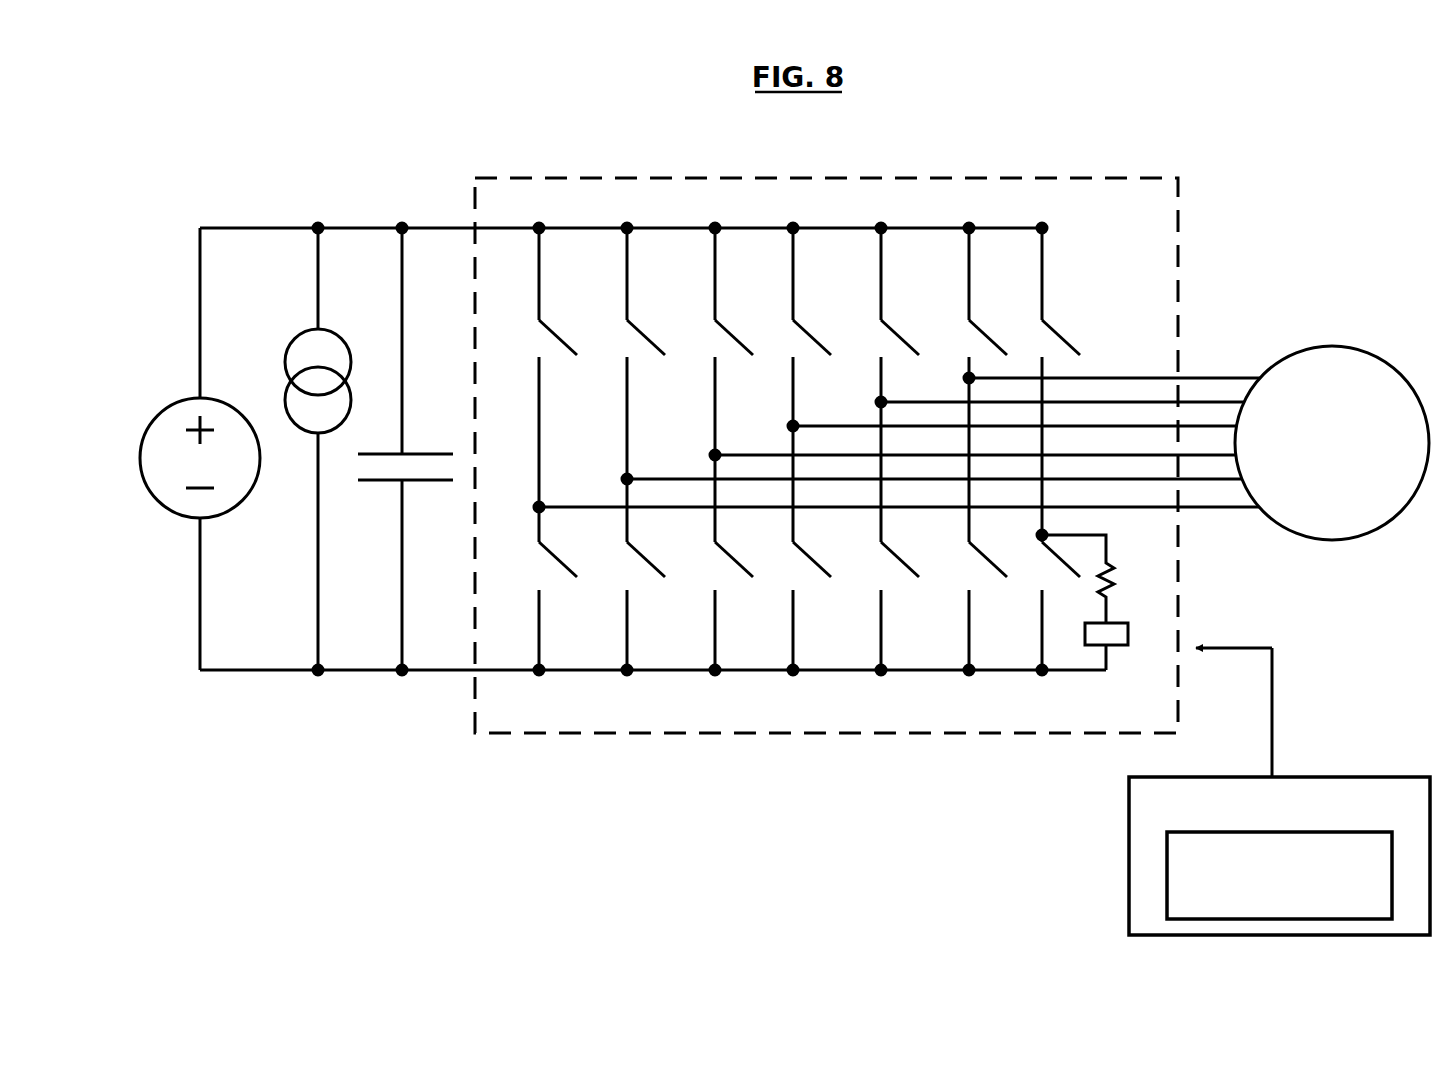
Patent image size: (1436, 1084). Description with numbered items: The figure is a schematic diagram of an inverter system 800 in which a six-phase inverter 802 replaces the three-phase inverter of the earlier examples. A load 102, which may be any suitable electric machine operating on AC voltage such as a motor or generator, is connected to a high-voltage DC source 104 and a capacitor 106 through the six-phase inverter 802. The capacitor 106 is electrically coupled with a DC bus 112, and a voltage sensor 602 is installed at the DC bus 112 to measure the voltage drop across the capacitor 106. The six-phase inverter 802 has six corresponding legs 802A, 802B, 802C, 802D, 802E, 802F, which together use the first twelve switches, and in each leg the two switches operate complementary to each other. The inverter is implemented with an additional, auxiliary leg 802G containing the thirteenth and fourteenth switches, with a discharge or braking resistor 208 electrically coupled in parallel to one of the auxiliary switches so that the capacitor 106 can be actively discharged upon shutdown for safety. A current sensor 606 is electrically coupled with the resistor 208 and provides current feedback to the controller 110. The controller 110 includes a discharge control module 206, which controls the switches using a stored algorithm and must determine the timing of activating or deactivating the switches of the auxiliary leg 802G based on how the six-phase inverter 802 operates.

The inverter system 800 is at (784, 144).
The DC bus 112 is at (392, 196).
The high-voltage DC source 104 is at (200, 492).
The voltage sensor 602 is at (286, 306).
The capacitor 106 is at (408, 449).
The six-phase inverter 802 is at (1178, 250).
The load 102 is at (984, 443).
The first leg 802A is at (537, 706).
The second leg 802B is at (626, 706).
The third leg 802C is at (715, 706).
The fourth leg 802D is at (795, 706).
The fifth leg 802E is at (884, 706).
The sixth leg 802F is at (972, 706).
The auxiliary leg 802G is at (1050, 706).
The discharge resistor 208 is at (1100, 579).
The current sensor 606 is at (1130, 633).
The controller 110 is at (1279, 791).
The discharge control module 206 is at (1279, 875).